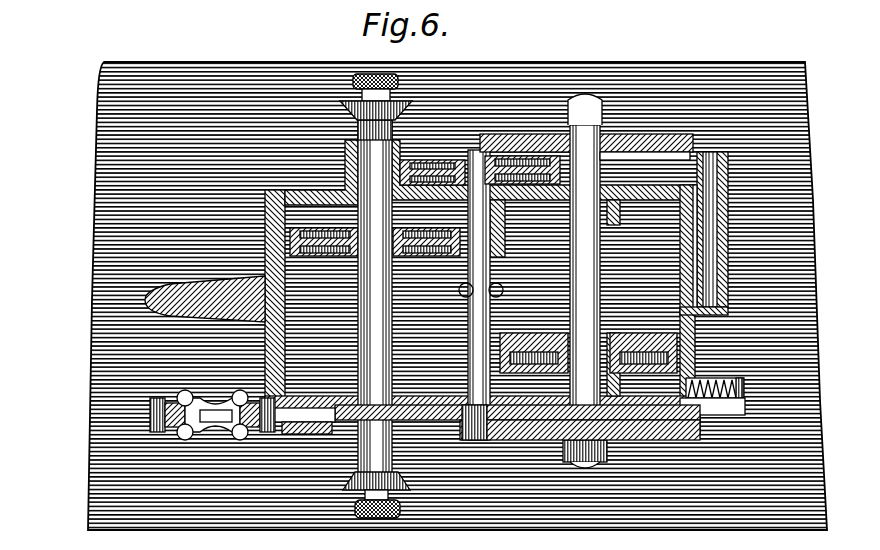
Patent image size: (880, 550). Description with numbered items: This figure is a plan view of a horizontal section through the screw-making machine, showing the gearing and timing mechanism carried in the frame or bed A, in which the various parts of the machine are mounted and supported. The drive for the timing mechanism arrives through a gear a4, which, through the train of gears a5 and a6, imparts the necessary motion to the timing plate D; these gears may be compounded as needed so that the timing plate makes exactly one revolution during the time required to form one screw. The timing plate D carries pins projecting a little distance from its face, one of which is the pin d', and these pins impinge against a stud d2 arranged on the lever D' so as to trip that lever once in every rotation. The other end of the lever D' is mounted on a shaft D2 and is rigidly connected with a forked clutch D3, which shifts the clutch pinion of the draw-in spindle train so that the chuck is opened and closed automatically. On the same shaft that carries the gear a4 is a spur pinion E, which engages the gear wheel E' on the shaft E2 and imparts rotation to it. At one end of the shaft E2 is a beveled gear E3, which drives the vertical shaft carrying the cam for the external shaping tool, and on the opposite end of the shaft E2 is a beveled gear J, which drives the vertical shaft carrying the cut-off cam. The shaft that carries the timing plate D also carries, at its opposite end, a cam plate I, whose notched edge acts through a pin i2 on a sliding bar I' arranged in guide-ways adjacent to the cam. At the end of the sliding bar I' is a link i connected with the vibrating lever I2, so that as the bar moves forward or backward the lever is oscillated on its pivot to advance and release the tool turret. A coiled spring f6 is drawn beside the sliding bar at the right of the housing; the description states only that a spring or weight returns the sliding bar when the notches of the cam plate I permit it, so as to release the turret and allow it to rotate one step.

The frame or bed A is at (457, 296).
The spur pinion E is at (480, 275).
The gear wheel E' is at (251, 275).
The shaft E2 is at (378, 298).
The beveled gear E3 is at (348, 107).
The beveled gear J is at (360, 476).
The gear a4 is at (432, 163).
The gear a5 is at (476, 330).
The gear a6 is at (545, 355).
The timing plate D is at (601, 142).
The pin d' is at (585, 281).
The stud d2 is at (612, 178).
The lever D' is at (684, 229).
The shaft D2 is at (728, 262).
The forked clutch D3 is at (735, 312).
The spring f6 is at (715, 380).
The cam plate I is at (481, 441).
The sliding bar I' is at (491, 440).
The pin i2 is at (474, 442).
The vibrating lever I2 is at (150, 414).
The link i is at (208, 428).